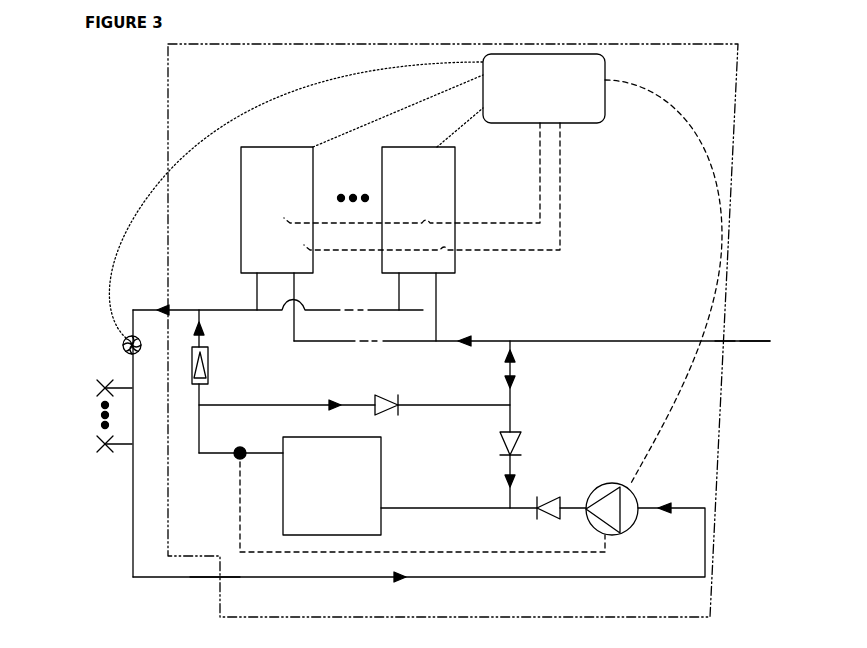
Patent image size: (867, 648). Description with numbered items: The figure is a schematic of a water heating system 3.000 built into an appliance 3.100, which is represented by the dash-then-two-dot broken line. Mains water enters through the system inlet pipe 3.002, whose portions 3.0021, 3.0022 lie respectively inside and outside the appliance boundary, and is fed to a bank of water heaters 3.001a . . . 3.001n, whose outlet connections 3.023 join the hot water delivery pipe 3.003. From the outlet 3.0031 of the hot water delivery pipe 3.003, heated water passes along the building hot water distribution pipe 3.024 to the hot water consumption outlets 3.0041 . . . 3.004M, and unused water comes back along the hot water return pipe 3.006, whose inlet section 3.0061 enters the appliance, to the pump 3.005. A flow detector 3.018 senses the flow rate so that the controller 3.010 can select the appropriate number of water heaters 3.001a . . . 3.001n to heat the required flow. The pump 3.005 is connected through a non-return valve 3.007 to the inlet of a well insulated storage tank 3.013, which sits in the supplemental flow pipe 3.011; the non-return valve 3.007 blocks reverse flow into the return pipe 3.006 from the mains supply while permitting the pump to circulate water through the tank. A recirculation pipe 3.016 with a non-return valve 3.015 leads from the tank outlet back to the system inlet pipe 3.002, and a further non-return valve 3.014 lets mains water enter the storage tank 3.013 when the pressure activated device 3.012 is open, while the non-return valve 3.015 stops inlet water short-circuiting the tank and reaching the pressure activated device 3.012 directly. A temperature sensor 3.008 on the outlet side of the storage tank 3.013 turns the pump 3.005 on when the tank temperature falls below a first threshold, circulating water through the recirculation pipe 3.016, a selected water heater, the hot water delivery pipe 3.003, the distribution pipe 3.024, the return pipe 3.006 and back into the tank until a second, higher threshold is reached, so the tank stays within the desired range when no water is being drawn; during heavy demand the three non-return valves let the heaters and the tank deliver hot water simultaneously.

The cooling system 3.000 is at (134, 128).
The appliance 3.100 is at (730, 198).
The controller 3.010 is at (415, 269).
The water heater 3.001a is at (277, 210).
The water heater 3.001n is at (418, 210).
The return pipes from loads 3.023 is at (255, 292).
The hot water delivery pipe 3.003 is at (222, 308).
The return line outlet 3.0031 is at (162, 308).
The flow detector 3.018 is at (123, 345).
The hot water consumption outlet 3.0041 is at (95, 373).
The hot water consumption outlet 3.004M is at (95, 456).
The building hot water distribution pipe 3.024 is at (132, 520).
The hot water return pipe 3.006 is at (395, 580).
The supply line inlet section 3.0061 is at (218, 578).
The pump 3.005 is at (630, 498).
The non-return valve 3.007 is at (558, 497).
The supplemental flow pipe 3.011 is at (485, 506).
The storage tank 3.013 is at (332, 486).
The temperature sensor 3.008 is at (238, 458).
The pressure activated device 3.012 is at (210, 357).
The recirculation pipe 3.016 is at (312, 406).
The non-return valve 3.015 is at (385, 401).
The non-return valve 3.014 is at (515, 432).
The system inlet pipe 3.002 is at (530, 339).
The supply header inner section 3.0021 is at (729, 339).
The supply header outer section 3.0022 is at (745, 339).